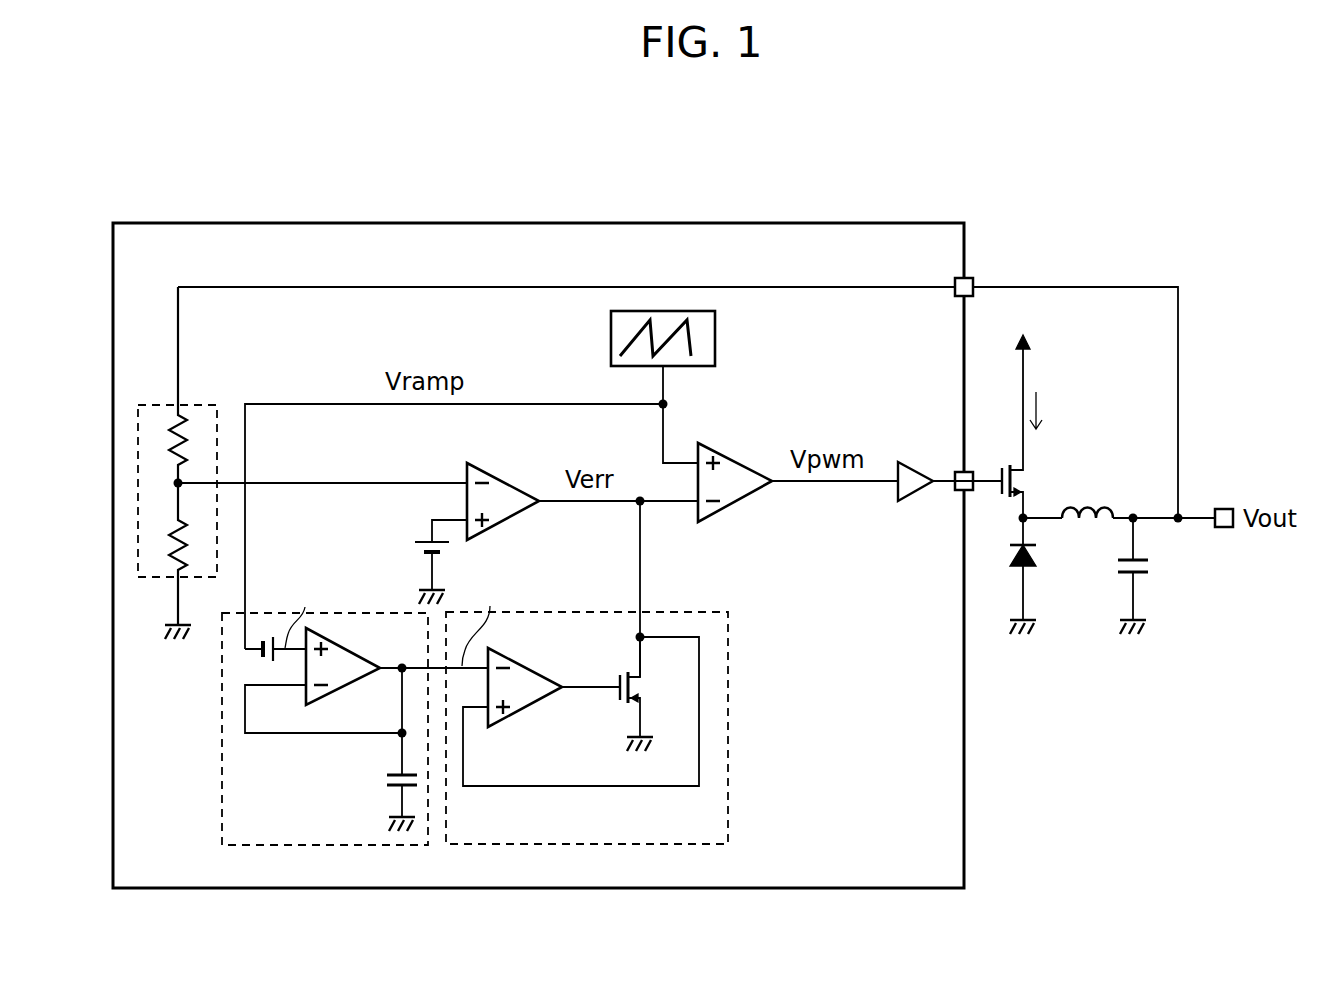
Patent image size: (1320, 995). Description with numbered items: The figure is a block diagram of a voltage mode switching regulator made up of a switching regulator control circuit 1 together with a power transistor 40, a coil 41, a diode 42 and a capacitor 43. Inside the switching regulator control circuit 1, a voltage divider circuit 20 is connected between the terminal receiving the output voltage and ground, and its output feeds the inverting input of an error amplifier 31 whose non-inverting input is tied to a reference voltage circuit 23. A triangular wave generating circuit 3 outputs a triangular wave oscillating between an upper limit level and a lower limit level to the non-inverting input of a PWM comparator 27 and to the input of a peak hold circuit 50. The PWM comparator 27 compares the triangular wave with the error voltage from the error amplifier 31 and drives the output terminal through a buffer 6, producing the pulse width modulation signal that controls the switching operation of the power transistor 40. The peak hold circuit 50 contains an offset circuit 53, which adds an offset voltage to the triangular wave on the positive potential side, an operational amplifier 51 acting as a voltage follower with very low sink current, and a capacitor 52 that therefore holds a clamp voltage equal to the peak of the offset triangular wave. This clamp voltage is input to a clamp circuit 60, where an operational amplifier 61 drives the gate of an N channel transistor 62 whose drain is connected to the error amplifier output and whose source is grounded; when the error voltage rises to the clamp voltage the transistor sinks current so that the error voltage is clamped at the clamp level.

The switching regulator control circuit 1 is at (563, 222).
The triangular wave generating circuit 3 is at (611, 340).
The buffer 6 is at (915, 463).
The voltage divider circuit 20 is at (200, 406).
The reference voltage circuit 23 is at (415, 542).
The PWM comparator 27 is at (748, 507).
The error amplifier 31 is at (527, 522).
The power transistor 40 is at (1030, 474).
The coil 41 is at (1095, 500).
The diode 42 is at (1012, 570).
The capacitor 43 is at (1118, 578).
The peak hold circuit 50 is at (222, 818).
The operational amplifier 51 is at (348, 686).
The capacitor 52 is at (387, 780).
The offset circuit 53 is at (260, 655).
The clamp circuit 60 is at (728, 810).
The operational amplifier 61 is at (536, 706).
The N channel transistor 62 is at (618, 672).